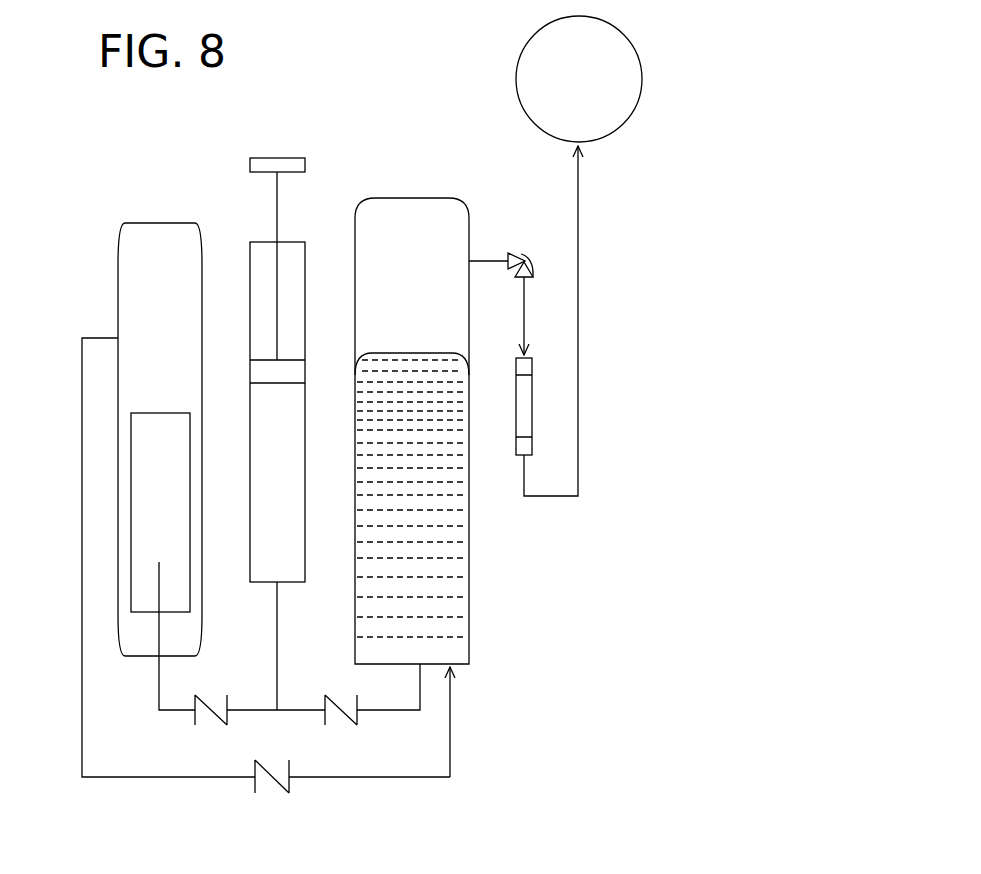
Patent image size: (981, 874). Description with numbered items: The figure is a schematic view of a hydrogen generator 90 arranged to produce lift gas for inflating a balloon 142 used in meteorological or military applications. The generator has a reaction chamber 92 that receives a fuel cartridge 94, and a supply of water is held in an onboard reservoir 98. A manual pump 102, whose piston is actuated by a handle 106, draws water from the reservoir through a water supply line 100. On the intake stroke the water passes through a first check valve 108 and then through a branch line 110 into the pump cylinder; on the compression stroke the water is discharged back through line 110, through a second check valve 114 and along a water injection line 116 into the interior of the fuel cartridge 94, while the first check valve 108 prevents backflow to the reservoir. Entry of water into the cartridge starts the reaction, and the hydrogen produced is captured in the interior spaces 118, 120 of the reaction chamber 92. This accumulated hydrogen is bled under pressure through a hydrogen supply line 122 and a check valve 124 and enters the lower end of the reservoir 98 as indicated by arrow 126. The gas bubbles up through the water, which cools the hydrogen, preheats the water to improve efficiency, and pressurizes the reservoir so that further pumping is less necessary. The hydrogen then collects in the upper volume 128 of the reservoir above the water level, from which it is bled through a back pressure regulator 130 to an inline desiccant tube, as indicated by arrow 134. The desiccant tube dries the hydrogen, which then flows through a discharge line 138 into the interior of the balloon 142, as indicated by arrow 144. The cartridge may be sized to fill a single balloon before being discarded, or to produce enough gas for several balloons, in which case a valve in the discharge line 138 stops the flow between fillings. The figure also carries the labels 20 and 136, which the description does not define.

The hydrogen generator 90 is at (100, 216).
The reaction chamber 92 is at (117, 293).
The interior space 118 is at (143, 266).
The fuel cartridge 94 is at (111, 395).
The interior space 120 is at (136, 630).
The water injection line 116 is at (150, 688).
The second check valve 114 is at (215, 697).
The branch line 110 is at (268, 634).
The first check valve 108 is at (363, 733).
The water supply line 100 is at (402, 688).
The hydrogen supply line 122 is at (197, 790).
The check valve 124 is at (308, 795).
The arrow 126 is at (462, 738).
The manual pump 102 is at (298, 232).
The handle 106 is at (290, 150).
The onboard reservoir 98 is at (481, 545).
The upper volume 128 is at (389, 300).
The liquid sample 20 is at (398, 429).
The back pressure regulator 130 is at (518, 240).
The conduit 136 is at (531, 325).
The arrow 134 is at (541, 408).
The discharge line 138 is at (596, 318).
The arrow 144 is at (601, 200).
The balloon 142 is at (512, 60).